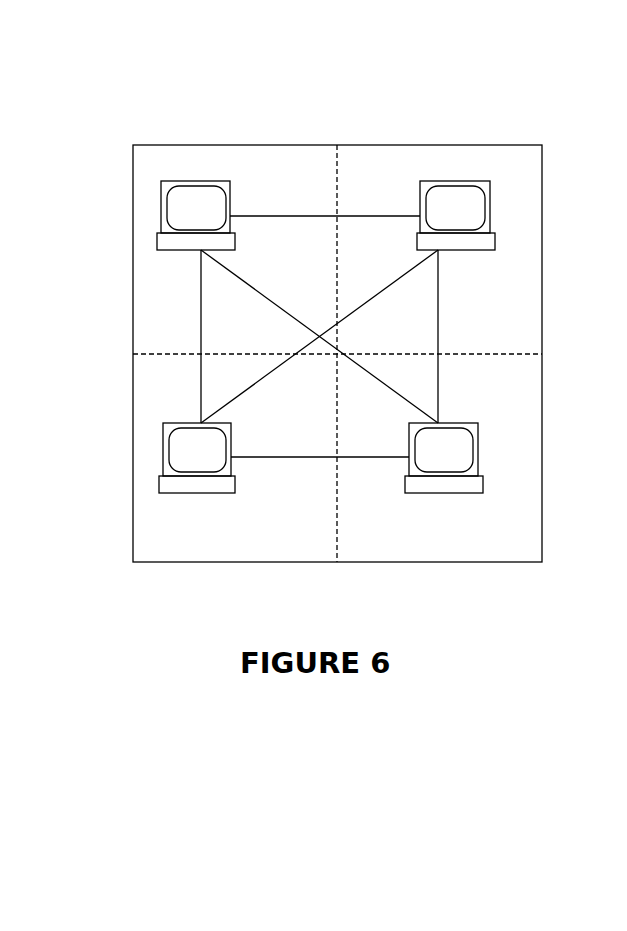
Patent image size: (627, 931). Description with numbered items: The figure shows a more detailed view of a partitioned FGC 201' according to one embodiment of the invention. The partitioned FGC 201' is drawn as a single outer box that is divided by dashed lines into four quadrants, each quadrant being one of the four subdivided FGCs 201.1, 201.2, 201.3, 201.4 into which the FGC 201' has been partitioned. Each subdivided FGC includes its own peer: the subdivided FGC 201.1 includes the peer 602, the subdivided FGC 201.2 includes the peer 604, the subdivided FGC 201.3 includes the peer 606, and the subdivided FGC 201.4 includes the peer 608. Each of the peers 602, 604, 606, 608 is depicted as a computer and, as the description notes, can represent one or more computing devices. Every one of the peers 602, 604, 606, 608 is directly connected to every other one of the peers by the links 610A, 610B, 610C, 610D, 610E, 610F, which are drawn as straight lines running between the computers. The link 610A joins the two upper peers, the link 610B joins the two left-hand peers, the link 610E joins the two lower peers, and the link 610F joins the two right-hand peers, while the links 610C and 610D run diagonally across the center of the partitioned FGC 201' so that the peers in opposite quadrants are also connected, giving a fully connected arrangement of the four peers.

The partitioned FGC 201' is at (336, 304).
The subdivided FGC 201.1 is at (189, 201).
The subdivided FGC 201.2 is at (466, 201).
The subdivided FGC 201.3 is at (200, 493).
The subdivided FGC 201.4 is at (461, 487).
The peer 602 is at (133, 223).
The peer 604 is at (513, 223).
The peer 606 is at (150, 488).
The peer 608 is at (507, 487).
The link 610A is at (267, 215).
The link 610B is at (201, 313).
The link 610C is at (258, 293).
The link 610D is at (262, 382).
The link 610E is at (270, 457).
The link 610F is at (438, 280).